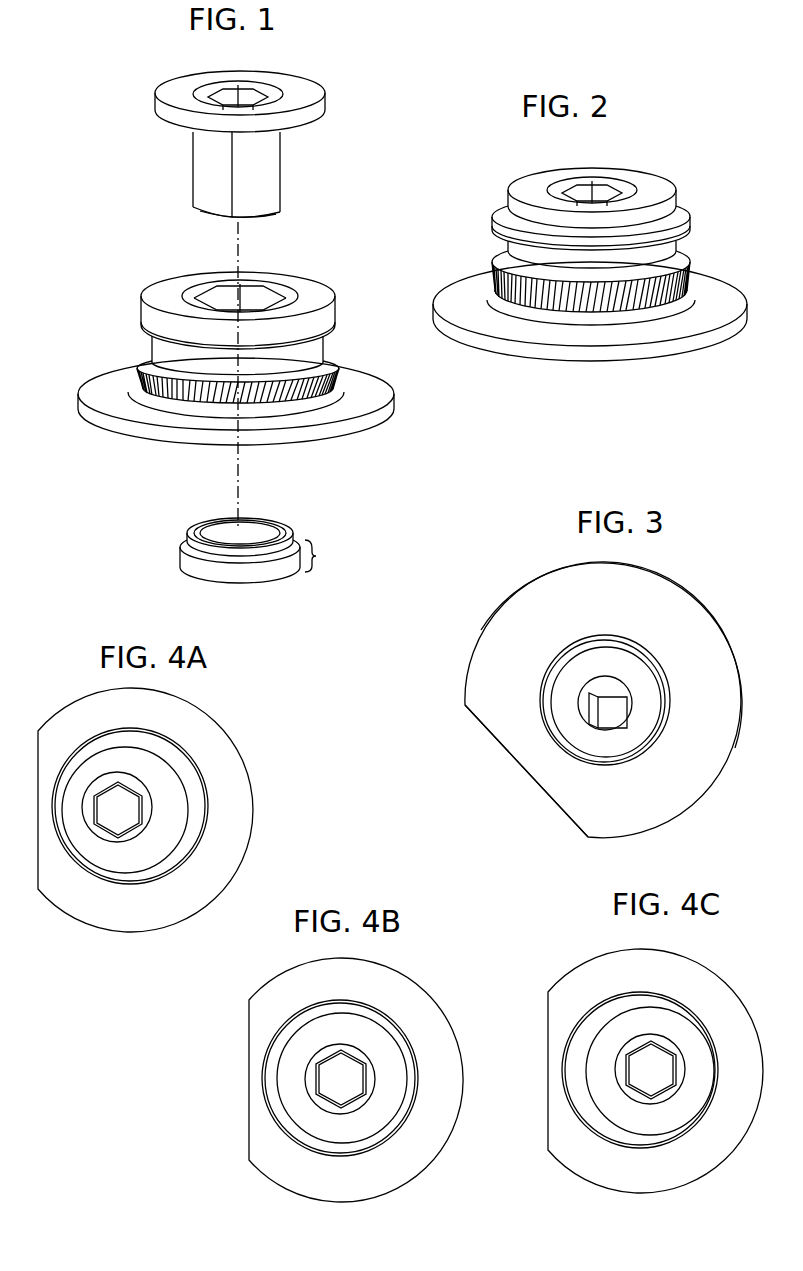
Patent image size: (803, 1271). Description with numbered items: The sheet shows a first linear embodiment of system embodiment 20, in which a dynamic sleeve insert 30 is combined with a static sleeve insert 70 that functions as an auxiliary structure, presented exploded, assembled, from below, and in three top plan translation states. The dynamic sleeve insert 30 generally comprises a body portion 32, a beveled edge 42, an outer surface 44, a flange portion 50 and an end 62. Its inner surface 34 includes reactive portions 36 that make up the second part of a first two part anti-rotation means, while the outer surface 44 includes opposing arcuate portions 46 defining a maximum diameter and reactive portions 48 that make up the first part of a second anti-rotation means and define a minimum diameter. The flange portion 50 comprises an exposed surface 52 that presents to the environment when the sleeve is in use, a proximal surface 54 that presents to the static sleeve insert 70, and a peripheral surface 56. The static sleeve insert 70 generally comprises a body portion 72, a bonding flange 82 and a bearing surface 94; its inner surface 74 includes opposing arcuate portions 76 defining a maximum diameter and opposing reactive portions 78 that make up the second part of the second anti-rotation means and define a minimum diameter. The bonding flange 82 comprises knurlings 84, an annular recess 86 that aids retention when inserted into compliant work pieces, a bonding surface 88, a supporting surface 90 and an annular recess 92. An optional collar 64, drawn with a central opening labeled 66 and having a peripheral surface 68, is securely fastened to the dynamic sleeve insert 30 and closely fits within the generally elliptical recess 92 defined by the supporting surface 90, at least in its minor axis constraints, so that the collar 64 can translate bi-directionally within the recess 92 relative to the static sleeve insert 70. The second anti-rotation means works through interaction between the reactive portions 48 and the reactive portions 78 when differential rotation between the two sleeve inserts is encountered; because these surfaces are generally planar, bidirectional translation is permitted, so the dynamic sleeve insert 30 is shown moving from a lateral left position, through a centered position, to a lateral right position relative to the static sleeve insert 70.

In FIG. 1, the system embodiment 20 is at (113, 230).
In FIG. 2, the system embodiment 20 is at (466, 188).
In FIG. 1, the dynamic sleeve insert 30 is at (178, 78).
In FIG. 2, the dynamic sleeve insert 30 is at (674, 183).
In FIG. 4A, the dynamic sleeve insert 30 is at (170, 840).
In FIG. 4B, the dynamic sleeve insert 30 is at (268, 1088).
In FIG. 4C, the dynamic sleeve insert 30 is at (603, 1108).
In FIG. 1, the body portion 32 is at (270, 195).
In FIG. 3, the inner surface 34 is at (617, 717).
In FIG. 4A, the inner surface 34 is at (122, 793).
In FIG. 4B, the inner surface 34 is at (318, 1063).
In FIG. 4C, the inner surface 34 is at (627, 1053).
In FIG. 1, the reactive portions 36 is at (236, 95).
In FIG. 2, the reactive portions 36 is at (598, 190).
In FIG. 3, the reactive portions 36 is at (600, 700).
In FIG. 1, the beveled edge 42 is at (283, 95).
In FIG. 2, the beveled edge 42 is at (628, 188).
In FIG. 4A, the beveled edge 42 is at (150, 815).
In FIG. 4B, the beveled edge 42 is at (325, 1107).
In FIG. 4C, the beveled edge 42 is at (640, 1100).
In FIG. 1, the outer surface 44 is at (270, 160).
In FIG. 1, the opposing arcuate portions 46 is at (245, 200).
In FIG. 1, the reactive portions 48 is at (205, 181).
In FIG. 1, the flange portion 50 is at (312, 118).
In FIG. 2, the flange portion 50 is at (520, 178).
In FIG. 1, the exposed surface 52 is at (160, 97).
In FIG. 2, the exposed surface 52 is at (555, 172).
In FIG. 4A, the exposed surface 52 is at (130, 864).
In FIG. 4B, the exposed surface 52 is at (287, 1071).
In FIG. 4C, the exposed surface 52 is at (665, 1020).
In FIG. 3, the proximal surface 54 is at (642, 652).
In FIG. 1, the peripheral surface 56 is at (177, 120).
In FIG. 2, the peripheral surface 56 is at (520, 232).
In FIG. 1, the end 62 is at (262, 216).
In FIG. 1, the collar 64 is at (173, 532).
In FIG. 3, the collar 64 is at (622, 750).
In FIG. 1, the nut bore 66 is at (250, 537).
In FIG. 1, the peripheral surface 68 is at (318, 556).
In FIG. 1, the static sleeve insert 70 is at (322, 448).
In FIG. 2, the static sleeve insert 70 is at (540, 356).
In FIG. 3, the static sleeve insert 70 is at (518, 578).
In FIG. 4A, the static sleeve insert 70 is at (232, 776).
In FIG. 4B, the static sleeve insert 70 is at (400, 970).
In FIG. 4C, the static sleeve insert 70 is at (600, 955).
In FIG. 1, the body portion 72 is at (165, 352).
In FIG. 2, the body portion 72 is at (592, 254).
In FIG. 1, the inner surface 74 is at (318, 290).
In FIG. 1, the opposing arcuate portions 76 is at (195, 280).
In FIG. 1, the opposing reactive portions 78 is at (258, 295).
In FIG. 1, the bonding flange 82 is at (110, 390).
In FIG. 2, the bonding flange 82 is at (630, 325).
In FIG. 3, the bonding flange 82 is at (710, 655).
In FIG. 1, the knurlings 84 is at (195, 408).
In FIG. 2, the knurlings 84 is at (592, 312).
In FIG. 1, the annular recess 86 is at (165, 403).
In FIG. 2, the annular recess 86 is at (512, 308).
In FIG. 1, the bonding surface 88 is at (335, 412).
In FIG. 2, the bonding surface 88 is at (475, 290).
In FIG. 3, the supporting surface 90 is at (490, 668).
In FIG. 3, the annular recess 92 is at (553, 738).
In FIG. 1, the bearing surface 94 is at (150, 300).
In FIG. 2, the bearing surface 94 is at (502, 205).
In FIG. 4A, the bearing surface 94 is at (185, 775).
In FIG. 4B, the bearing surface 94 is at (285, 1128).
In FIG. 4C, the bearing surface 94 is at (580, 1093).